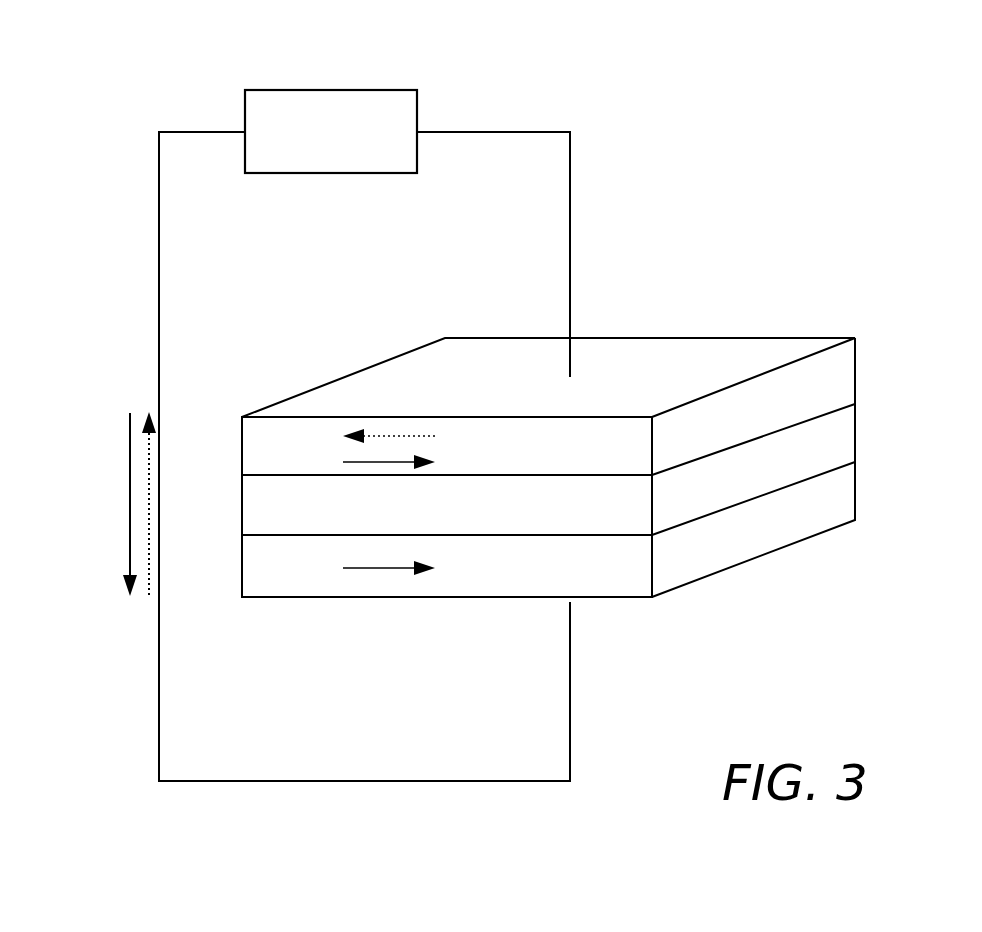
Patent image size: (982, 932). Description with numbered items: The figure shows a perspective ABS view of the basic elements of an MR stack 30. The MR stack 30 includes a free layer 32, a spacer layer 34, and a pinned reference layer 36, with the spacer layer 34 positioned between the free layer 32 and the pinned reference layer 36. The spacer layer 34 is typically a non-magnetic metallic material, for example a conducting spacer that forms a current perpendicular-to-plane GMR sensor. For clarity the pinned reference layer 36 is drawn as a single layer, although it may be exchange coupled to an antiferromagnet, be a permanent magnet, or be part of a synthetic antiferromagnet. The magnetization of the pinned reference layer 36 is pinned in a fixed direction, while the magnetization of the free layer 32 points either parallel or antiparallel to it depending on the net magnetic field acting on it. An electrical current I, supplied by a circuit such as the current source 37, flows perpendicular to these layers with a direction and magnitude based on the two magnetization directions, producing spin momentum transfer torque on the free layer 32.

The MR stack 30 is at (86, 178).
The free layer 32 is at (837, 373).
The spacer layer 34 is at (840, 433).
The pinned reference layer 36 is at (843, 492).
The current source 37 is at (342, 89).